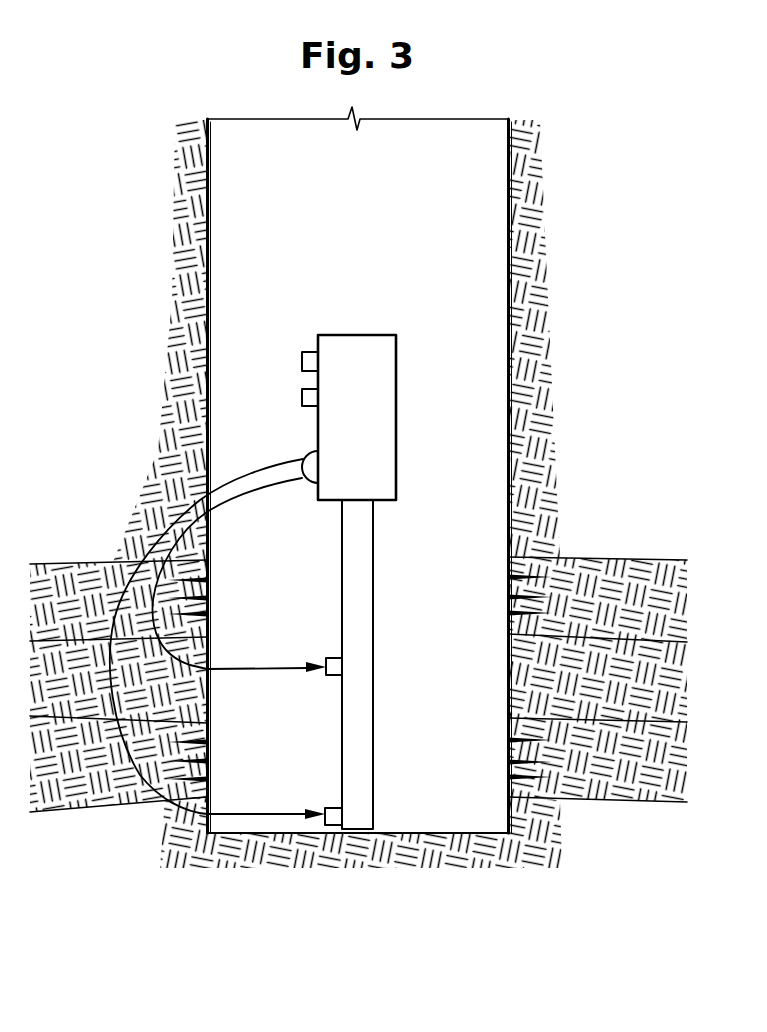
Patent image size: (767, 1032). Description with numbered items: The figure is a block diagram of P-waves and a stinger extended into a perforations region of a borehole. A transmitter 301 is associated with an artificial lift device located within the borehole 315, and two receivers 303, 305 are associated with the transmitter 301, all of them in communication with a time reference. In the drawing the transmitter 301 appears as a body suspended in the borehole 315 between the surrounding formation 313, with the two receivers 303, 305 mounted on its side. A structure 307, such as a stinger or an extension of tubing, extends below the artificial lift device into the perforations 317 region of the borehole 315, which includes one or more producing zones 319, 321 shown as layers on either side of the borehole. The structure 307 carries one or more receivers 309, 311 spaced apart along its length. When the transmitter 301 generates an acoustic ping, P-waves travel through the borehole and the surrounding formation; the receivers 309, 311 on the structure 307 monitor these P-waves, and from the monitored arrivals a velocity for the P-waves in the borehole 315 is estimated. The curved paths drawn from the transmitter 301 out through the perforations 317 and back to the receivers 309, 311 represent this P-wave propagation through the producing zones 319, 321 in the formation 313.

The transmitter 301 is at (387, 435).
The receiver 303 is at (302, 396).
The receiver 305 is at (302, 358).
The structure 307 is at (366, 529).
The receiver 309 is at (333, 677).
The receiver 311 is at (334, 823).
The formation 313 is at (513, 327).
The borehole 315 is at (460, 164).
The perforations 317 is at (155, 525).
The producing zone 319 is at (655, 560).
The producing zone 321 is at (653, 790).